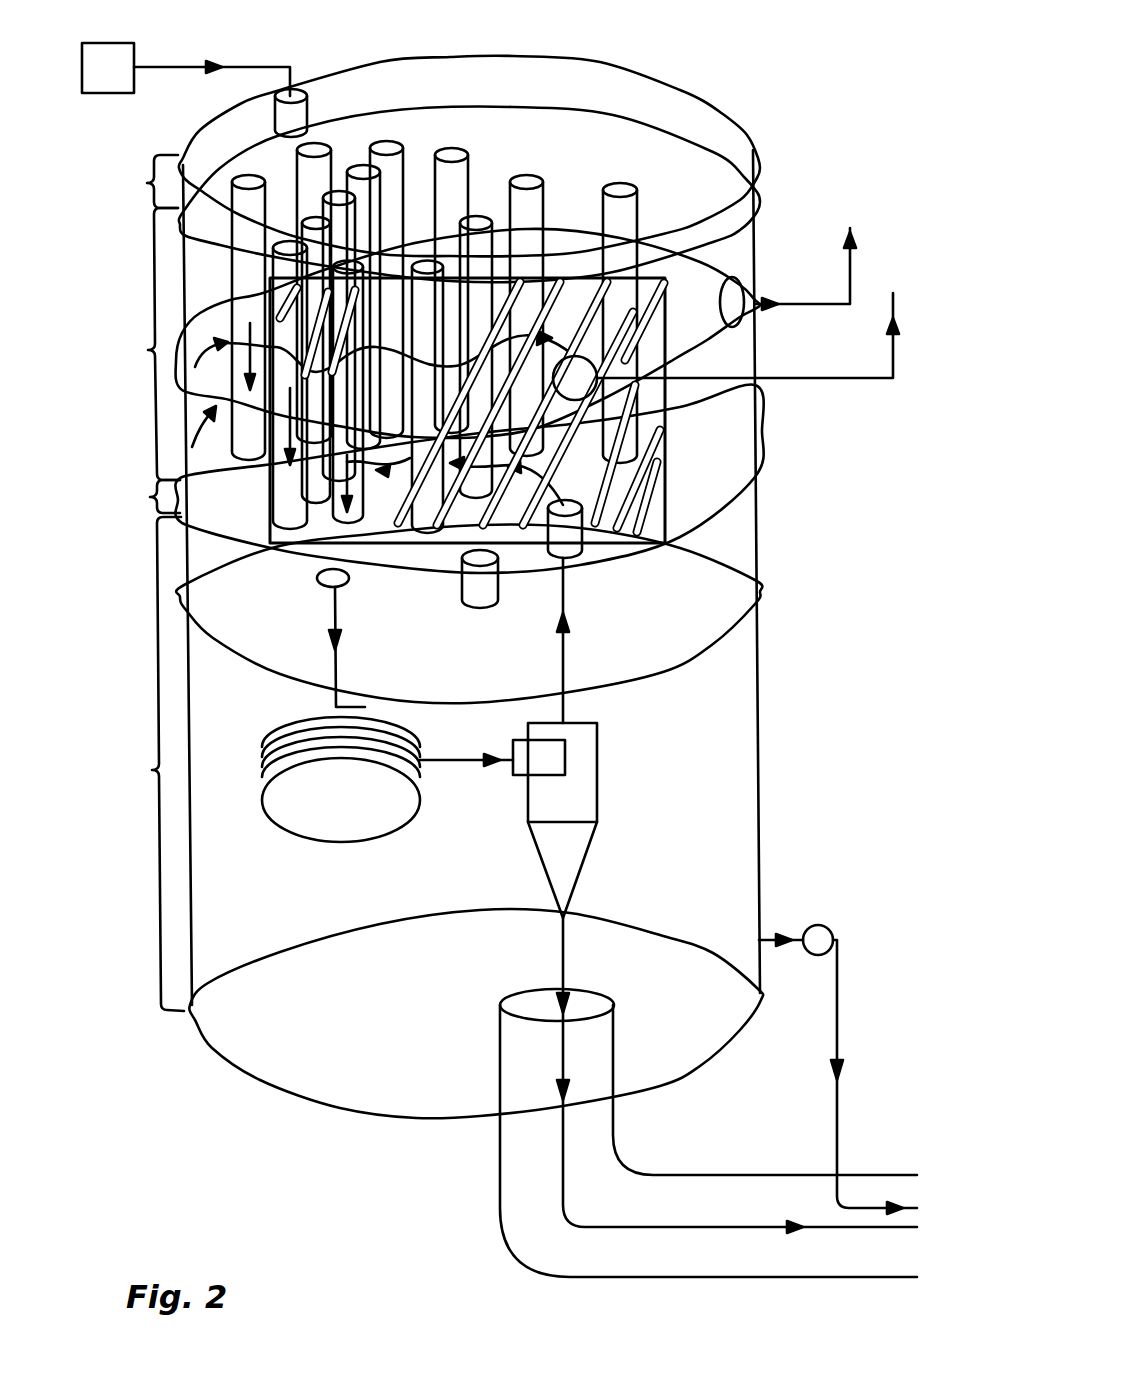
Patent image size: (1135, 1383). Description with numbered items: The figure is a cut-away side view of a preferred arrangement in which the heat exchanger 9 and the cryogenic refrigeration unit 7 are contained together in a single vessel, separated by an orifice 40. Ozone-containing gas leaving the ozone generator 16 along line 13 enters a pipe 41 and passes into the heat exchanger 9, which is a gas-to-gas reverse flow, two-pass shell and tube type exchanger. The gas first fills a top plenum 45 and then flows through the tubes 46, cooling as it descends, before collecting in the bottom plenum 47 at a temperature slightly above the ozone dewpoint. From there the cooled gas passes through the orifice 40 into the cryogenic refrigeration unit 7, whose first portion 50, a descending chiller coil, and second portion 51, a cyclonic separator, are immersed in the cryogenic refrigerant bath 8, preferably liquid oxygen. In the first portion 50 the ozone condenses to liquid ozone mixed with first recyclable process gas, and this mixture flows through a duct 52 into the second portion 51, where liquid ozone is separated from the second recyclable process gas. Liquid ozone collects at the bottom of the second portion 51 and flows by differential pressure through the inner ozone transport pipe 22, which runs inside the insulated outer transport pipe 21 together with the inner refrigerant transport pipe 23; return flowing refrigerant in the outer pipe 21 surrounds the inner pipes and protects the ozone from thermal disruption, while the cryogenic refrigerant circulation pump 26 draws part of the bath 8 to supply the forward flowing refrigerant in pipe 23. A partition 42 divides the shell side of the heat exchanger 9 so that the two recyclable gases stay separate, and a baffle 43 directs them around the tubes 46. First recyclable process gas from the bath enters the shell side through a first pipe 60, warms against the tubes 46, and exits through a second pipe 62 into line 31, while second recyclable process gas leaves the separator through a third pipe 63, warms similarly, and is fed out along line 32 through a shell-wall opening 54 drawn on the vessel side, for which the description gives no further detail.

The cryogenic refrigeration unit 7 is at (154, 764).
The cryogenic refrigerant bath 8 is at (215, 680).
The heat exchanger 9 is at (442, 360).
The line 13 is at (178, 66).
The ozone generator 16 is at (100, 93).
The insulated outer transport pipe 21 is at (500, 1150).
The inner ozone transport pipe 22 is at (563, 1190).
The inner refrigerant transport pipe 23 is at (837, 1107).
The cryogenic refrigerant circulation pump 26 is at (833, 940).
The line 31 is at (835, 378).
The line 32 is at (800, 302).
The orifice 40 is at (317, 578).
The pipe 41 is at (310, 128).
The partition 42 is at (759, 540).
The baffle 43 is at (748, 378).
The top plenum 45 is at (144, 181).
The tubes 46 is at (453, 155).
The bottom plenum 47 is at (437, 478).
The first portion 50 is at (277, 828).
The second portion 51 is at (597, 760).
The duct 52 is at (453, 763).
The port 54 is at (760, 285).
The first pipe 60 is at (485, 590).
The second pipe 62 is at (577, 378).
The third pipe 63 is at (570, 647).